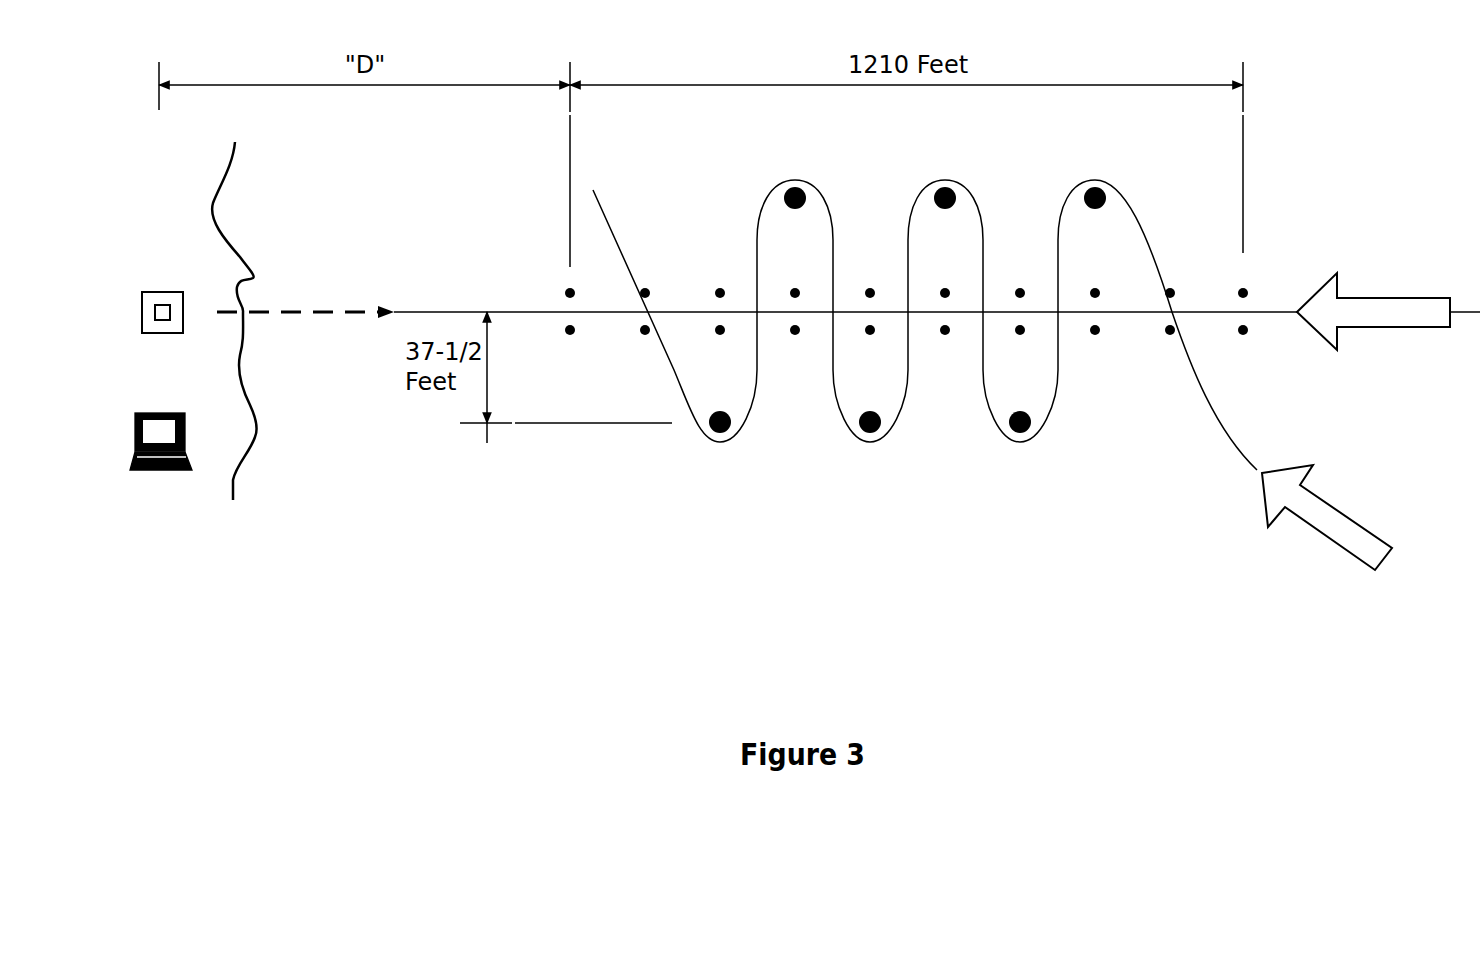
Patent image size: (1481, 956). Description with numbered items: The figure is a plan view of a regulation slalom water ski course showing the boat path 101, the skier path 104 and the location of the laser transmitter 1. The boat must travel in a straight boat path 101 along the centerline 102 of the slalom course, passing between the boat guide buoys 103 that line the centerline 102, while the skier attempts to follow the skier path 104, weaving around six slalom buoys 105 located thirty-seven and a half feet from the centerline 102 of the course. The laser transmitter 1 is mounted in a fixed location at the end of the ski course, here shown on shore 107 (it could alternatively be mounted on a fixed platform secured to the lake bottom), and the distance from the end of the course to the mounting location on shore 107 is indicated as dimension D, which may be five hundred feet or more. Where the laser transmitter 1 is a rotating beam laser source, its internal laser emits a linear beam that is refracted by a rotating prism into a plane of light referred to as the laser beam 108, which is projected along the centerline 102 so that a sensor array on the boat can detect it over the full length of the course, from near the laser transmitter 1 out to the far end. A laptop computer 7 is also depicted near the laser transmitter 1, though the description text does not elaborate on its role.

The laser transmitter 1 is at (162, 336).
The laptop computer 7 is at (161, 459).
The boat path 101 is at (1388, 311).
The centerline 102 is at (438, 310).
The boat guide buoys 103 is at (1245, 288).
The skier path 104 is at (1327, 517).
The slalom buoys 105 is at (1097, 183).
The shore 107 is at (241, 340).
The laser beam 108 is at (340, 310).